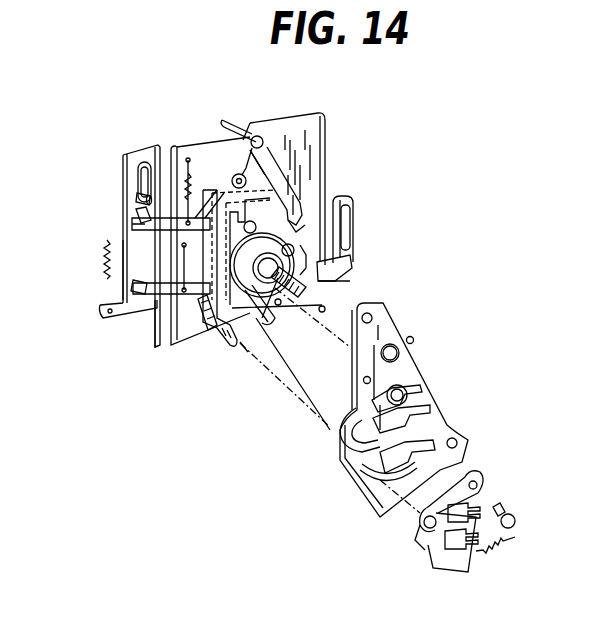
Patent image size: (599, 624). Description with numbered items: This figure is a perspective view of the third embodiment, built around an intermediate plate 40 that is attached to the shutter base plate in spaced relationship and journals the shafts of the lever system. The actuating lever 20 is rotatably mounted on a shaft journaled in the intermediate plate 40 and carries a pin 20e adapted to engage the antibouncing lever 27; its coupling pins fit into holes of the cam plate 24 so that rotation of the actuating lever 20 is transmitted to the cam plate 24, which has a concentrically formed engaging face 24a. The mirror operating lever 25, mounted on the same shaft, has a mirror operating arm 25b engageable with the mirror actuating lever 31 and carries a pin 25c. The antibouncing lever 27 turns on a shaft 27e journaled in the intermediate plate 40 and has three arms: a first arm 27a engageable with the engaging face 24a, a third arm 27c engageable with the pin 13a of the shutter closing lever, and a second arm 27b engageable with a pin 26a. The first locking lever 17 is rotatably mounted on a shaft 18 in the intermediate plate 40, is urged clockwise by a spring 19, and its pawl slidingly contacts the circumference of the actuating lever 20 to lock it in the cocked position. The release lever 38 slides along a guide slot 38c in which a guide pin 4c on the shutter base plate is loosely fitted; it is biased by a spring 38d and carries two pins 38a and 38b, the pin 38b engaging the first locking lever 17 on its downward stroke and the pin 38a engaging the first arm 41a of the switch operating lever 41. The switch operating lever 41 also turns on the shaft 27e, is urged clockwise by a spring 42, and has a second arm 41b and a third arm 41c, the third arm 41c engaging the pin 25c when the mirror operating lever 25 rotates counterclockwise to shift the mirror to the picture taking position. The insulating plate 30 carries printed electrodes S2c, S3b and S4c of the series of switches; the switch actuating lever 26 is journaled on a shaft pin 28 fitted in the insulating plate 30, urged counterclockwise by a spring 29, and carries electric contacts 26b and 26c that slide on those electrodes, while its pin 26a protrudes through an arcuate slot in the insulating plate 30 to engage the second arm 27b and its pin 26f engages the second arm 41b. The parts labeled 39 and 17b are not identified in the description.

The release lever 38 is at (128, 170).
The guide slot 38c is at (150, 162).
The guide pin 4c is at (140, 198).
The pin 38a is at (143, 212).
The first arm 41a is at (133, 223).
The spring 39 is at (107, 248).
The spring 38d is at (108, 275).
The pin 38b is at (133, 287).
The arm of lever 17 17b is at (142, 312).
The spring 19 is at (158, 300).
The shaft 18 is at (197, 225).
The spring 42 is at (176, 148).
The switch operating lever 41 is at (215, 195).
The first locking lever 17 is at (197, 305).
The second arm 41b is at (220, 340).
The second arm 27b is at (205, 332).
The intermediate plate 40 is at (318, 135).
The pin 13a is at (240, 125).
The antibouncing lever 27 is at (295, 192).
The shaft 27e is at (236, 174).
The third arm 27c is at (262, 168).
The first arm 27a is at (294, 236).
The pin 20e is at (290, 222).
The cam plate 24 is at (340, 198).
The engaging face 24a is at (349, 217).
The third arm 41c is at (345, 238).
The pin 25c is at (343, 265).
The mirror actuating lever 31 is at (350, 273).
The actuating lever 20 is at (257, 310).
The mirror operating arm 25b is at (304, 290).
The mirror operating lever 25 is at (261, 320).
The insulating plate 30 is at (418, 367).
The electrodes of switch S3 S3b is at (420, 387).
The electrodes of switch S4 S4c is at (430, 408).
The electrodes of switch S2 S2c is at (435, 453).
The switch actuating lever 26 is at (436, 540).
The pin 26a is at (412, 515).
The pin 26f is at (415, 530).
The electric contact 26b is at (480, 488).
The electric contact 26c is at (483, 545).
The shaft pin 28 is at (517, 520).
The spring 29 is at (480, 552).